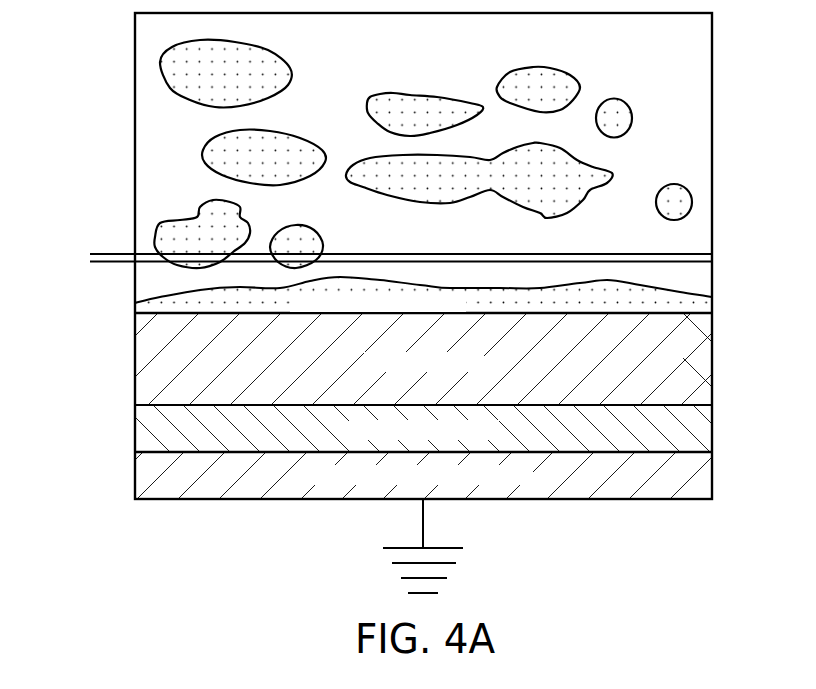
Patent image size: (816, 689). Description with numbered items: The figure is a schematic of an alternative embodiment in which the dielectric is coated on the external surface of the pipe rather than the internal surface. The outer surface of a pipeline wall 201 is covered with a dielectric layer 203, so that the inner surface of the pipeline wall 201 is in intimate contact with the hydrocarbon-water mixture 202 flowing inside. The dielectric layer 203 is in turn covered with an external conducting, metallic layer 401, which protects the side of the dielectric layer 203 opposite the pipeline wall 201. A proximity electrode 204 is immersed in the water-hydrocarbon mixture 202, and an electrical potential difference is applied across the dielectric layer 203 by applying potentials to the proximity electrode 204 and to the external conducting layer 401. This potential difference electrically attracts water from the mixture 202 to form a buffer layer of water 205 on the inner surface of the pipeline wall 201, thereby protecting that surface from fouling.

The hydrocarbon-water mixture 202 is at (97, 12).
The proximity electrode 204 is at (90, 258).
The buffer layer of water 205 is at (697, 303).
The pipeline wall 201 is at (150, 341).
The dielectric layer 203 is at (150, 420).
The external conducting layer 401 is at (148, 474).